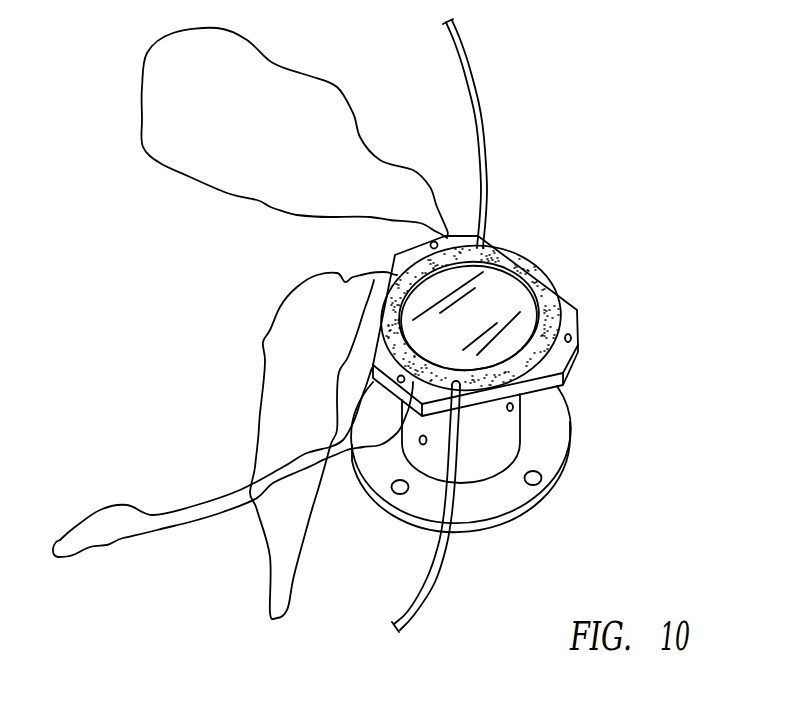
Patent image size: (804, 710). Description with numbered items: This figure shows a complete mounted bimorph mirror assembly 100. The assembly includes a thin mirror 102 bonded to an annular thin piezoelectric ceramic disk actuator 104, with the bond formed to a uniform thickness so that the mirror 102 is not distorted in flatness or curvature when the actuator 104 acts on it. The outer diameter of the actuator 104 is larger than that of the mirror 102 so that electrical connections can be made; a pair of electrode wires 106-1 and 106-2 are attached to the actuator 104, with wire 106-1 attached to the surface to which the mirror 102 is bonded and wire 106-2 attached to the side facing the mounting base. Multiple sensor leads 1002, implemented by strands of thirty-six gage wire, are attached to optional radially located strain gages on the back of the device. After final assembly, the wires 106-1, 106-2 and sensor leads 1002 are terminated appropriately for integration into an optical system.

The bimorph mirror assembly 100 is at (538, 325).
The thin mirror 102 is at (493, 282).
The annular thin piezoelectric ceramic disk actuator 104 is at (533, 272).
The electrode wire 106-1 is at (443, 572).
The electrode wire 106-2 is at (472, 58).
The sensor leads 1002 is at (207, 503).